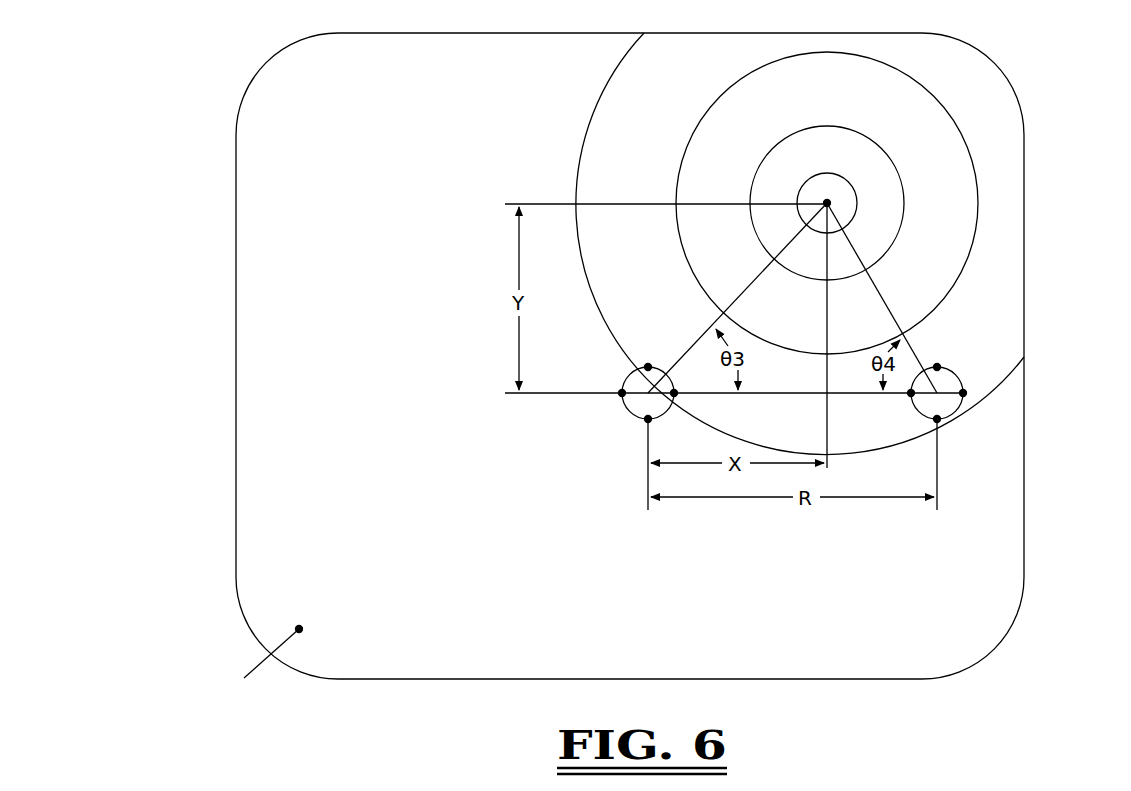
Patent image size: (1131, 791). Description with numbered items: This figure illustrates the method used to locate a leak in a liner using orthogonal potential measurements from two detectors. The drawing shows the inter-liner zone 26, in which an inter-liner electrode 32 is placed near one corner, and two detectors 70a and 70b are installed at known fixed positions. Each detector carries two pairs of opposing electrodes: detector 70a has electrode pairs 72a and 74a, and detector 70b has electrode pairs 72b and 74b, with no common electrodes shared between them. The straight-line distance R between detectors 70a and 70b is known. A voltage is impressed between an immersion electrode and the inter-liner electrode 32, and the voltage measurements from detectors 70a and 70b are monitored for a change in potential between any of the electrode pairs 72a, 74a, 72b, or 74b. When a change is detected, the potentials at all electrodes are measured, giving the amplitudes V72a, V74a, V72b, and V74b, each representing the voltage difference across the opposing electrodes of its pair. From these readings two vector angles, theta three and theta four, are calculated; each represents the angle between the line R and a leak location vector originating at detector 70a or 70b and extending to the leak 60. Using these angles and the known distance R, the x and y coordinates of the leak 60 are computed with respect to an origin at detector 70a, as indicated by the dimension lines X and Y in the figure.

The inter-liner zone 26 is at (318, 101).
The leak 60 is at (830, 199).
The detector 70a is at (652, 362).
The detector 70b is at (947, 363).
The electrode pair 72a is at (674, 393).
The electrode pair 72b is at (911, 393).
The electrode pair 74a is at (648, 367).
The electrode pair 74b is at (937, 367).
The inter-liner electrode 32 is at (307, 630).